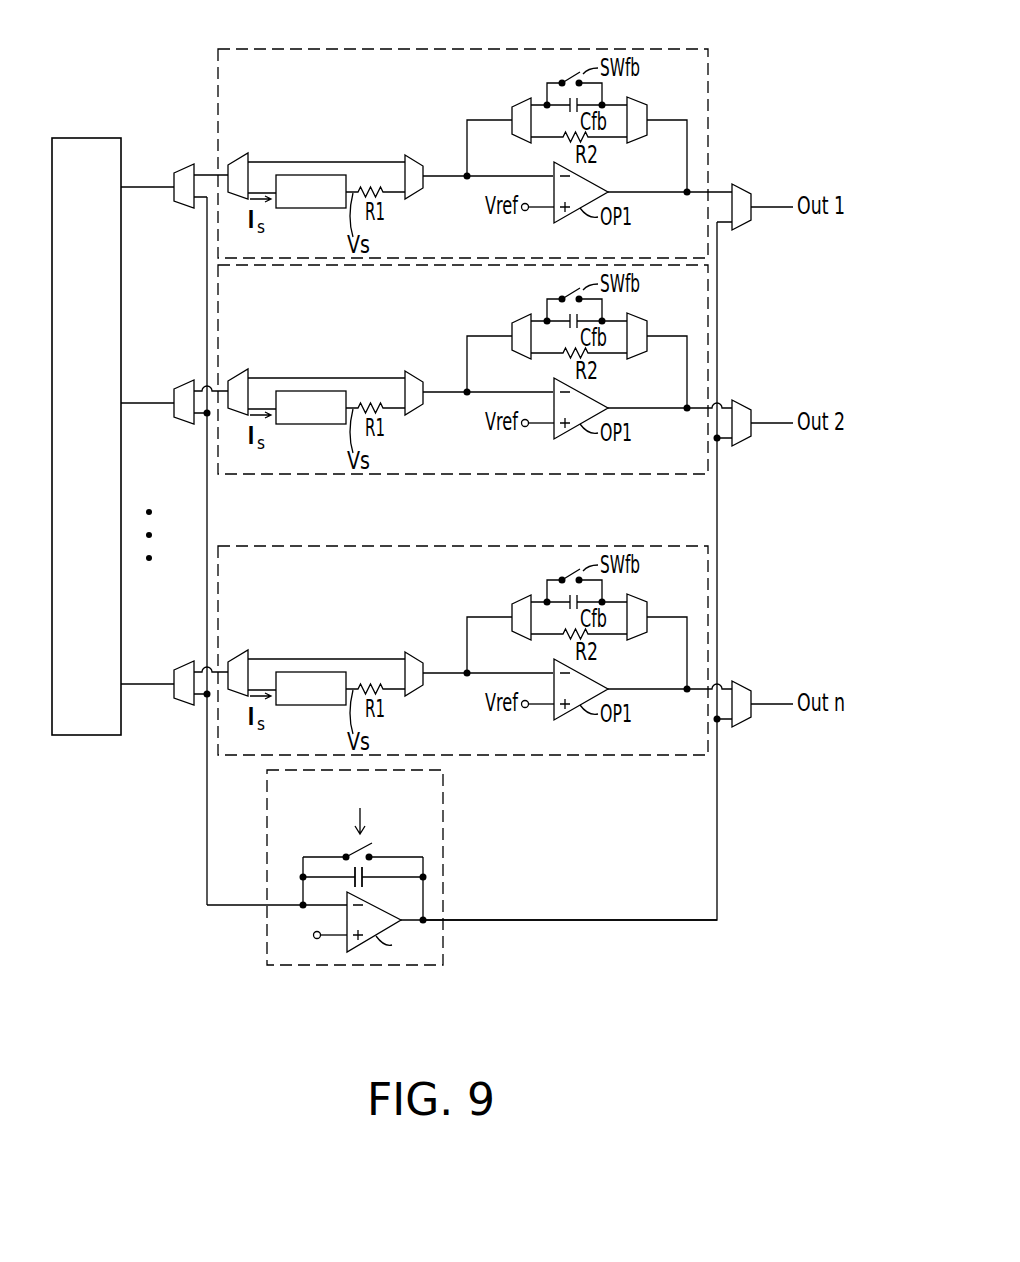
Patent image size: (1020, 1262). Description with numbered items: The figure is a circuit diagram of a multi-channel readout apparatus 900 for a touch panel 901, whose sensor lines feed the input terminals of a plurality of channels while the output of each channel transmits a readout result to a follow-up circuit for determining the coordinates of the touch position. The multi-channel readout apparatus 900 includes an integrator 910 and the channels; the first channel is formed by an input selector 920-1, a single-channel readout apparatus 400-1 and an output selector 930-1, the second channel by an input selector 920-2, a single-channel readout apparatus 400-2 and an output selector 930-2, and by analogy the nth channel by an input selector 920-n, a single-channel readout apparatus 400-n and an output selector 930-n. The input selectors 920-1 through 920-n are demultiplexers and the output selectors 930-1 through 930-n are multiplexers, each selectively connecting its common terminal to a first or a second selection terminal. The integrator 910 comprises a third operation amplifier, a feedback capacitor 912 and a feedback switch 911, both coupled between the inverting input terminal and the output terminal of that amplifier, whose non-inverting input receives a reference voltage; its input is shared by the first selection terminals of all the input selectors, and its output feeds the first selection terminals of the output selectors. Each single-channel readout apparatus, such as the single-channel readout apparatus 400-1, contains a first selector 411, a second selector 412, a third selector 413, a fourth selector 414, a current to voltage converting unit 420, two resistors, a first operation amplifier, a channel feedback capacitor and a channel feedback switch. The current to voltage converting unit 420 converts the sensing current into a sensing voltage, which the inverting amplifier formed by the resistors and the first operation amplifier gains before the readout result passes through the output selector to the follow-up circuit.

The multi-channel readout apparatus 900 is at (721, 966).
The touch panel 901 is at (86, 735).
The integrator 910 is at (462, 867).
The feedback switch 911 is at (372, 843).
The feedback capacitor 912 is at (367, 882).
The input selector 920-1 is at (188, 164).
The input selector 920-2 is at (186, 377).
The input selector 920-n is at (186, 658).
The output selector 930-1 is at (736, 185).
The output selector 930-2 is at (775, 410).
The output selector 930-n is at (775, 691).
The single-channel readout apparatus 400-1 is at (708, 92).
The single-channel readout apparatus 400-2 is at (507, 369).
The single-channel readout apparatus 400-n is at (507, 650).
The first selector 411 is at (240, 160).
The second selector 412 is at (409, 156).
The third selector 413 is at (514, 106).
The fourth selector 414 is at (642, 98).
The current to voltage converting unit 420 is at (311, 208).